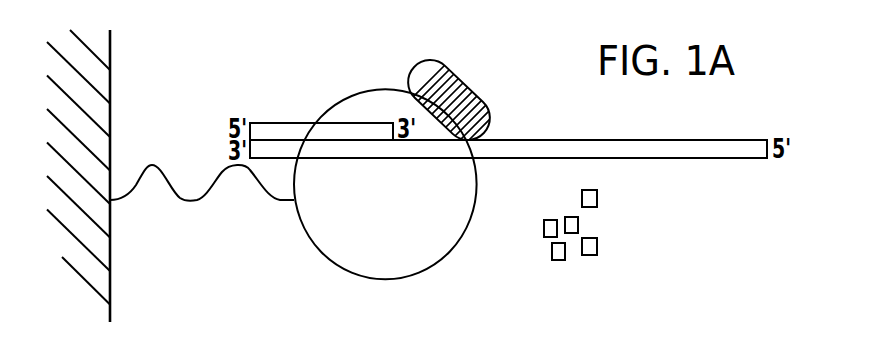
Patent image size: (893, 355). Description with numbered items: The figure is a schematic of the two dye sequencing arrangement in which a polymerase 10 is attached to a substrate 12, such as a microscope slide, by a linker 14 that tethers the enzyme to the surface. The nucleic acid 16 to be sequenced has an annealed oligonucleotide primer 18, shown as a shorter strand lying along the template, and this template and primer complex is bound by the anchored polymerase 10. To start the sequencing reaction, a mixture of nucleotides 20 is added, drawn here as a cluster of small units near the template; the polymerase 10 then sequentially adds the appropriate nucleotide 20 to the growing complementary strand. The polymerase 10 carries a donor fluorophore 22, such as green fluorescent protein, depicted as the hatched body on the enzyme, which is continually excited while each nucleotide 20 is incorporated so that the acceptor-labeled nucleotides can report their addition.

The polymerase 10 is at (458, 247).
The substrate 12 is at (105, 257).
The linker 14 is at (194, 202).
The nucleic acid 16 is at (682, 160).
The oligonucleotide primer 18 is at (335, 122).
The nucleotides 20 is at (598, 248).
The donor fluorophore 22 is at (477, 91).